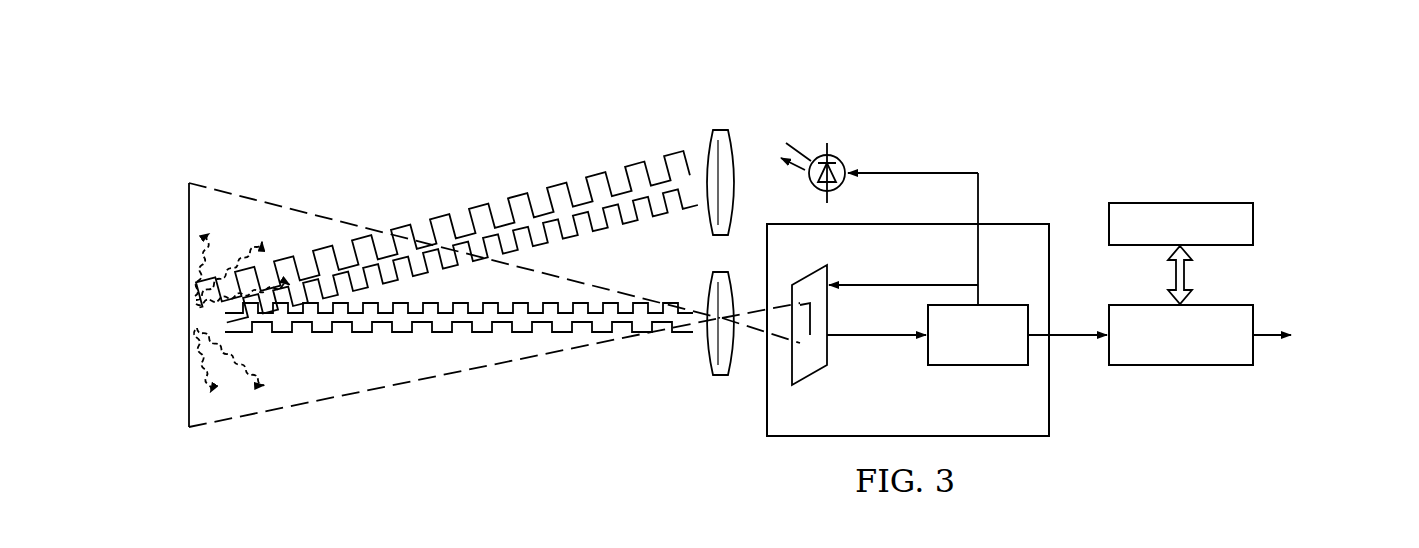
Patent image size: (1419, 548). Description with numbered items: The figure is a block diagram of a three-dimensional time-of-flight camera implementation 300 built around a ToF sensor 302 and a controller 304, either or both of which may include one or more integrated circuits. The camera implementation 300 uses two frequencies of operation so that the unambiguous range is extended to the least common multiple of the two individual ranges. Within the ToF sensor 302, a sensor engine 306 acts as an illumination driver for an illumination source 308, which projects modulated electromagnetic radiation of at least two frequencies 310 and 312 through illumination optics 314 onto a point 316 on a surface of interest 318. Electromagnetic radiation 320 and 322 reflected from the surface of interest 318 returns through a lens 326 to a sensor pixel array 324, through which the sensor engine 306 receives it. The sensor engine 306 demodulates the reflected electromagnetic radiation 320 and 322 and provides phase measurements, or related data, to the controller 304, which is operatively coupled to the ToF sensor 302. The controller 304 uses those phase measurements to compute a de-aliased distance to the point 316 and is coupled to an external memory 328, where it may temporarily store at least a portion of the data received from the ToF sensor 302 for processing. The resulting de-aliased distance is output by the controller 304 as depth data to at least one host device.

The 3D ToF camera implementation 300 is at (1112, 100).
The ToF sensor 302 is at (1017, 221).
The controller 304 is at (1190, 367).
The sensor engine 306 is at (990, 367).
The illumination source 308 is at (835, 154).
The modulated electromagnetic radiation of a first frequency 310 is at (630, 228).
The modulated electromagnetic radiation of a second frequency 312 is at (438, 217).
The illumination optics 314 is at (719, 129).
The point 316 is at (193, 337).
The surface of interest 318 is at (212, 203).
The reflected electromagnetic radiation 320 is at (668, 302).
The reflected electromagnetic radiation 322 is at (360, 335).
The sensor pixel array 324 is at (828, 354).
The lens 326 is at (722, 376).
The external memory 328 is at (1190, 203).